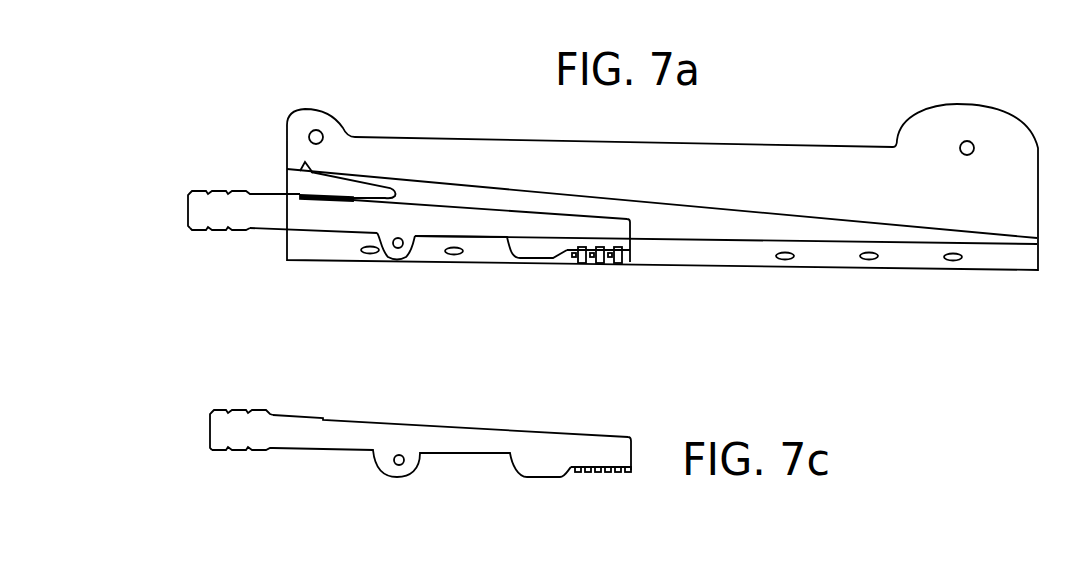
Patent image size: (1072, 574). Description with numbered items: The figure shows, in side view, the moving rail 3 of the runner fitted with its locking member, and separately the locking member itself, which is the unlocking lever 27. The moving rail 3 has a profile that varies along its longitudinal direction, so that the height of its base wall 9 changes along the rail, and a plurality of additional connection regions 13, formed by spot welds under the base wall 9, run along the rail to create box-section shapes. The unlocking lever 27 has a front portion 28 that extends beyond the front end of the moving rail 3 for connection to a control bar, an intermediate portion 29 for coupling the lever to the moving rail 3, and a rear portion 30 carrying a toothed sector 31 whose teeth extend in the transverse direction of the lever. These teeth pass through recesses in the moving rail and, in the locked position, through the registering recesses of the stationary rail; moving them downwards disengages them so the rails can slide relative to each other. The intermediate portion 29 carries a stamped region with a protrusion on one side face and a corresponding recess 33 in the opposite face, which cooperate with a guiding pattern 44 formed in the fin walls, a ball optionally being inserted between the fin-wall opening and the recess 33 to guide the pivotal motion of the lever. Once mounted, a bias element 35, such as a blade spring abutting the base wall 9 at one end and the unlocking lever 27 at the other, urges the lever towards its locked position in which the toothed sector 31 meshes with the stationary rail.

In FIG. 7a, the moving rail 3 is at (775, 103).
In FIG. 7a, the base wall 9 is at (800, 218).
In FIG. 7a, the additional connection regions 13 is at (873, 262).
In FIG. 7a, the unlocking lever 27 is at (162, 194).
In FIG. 7a, the front portion 28 is at (220, 207).
In FIG. 7c, the front portion 28 is at (233, 430).
In FIG. 7c, the intermediate portion 29 is at (398, 438).
In FIG. 7c, the rear portion 30 is at (597, 445).
In FIG. 7a, the toothed sector 31 is at (632, 252).
In FIG. 7c, the toothed sector 31 is at (632, 472).
In FIG. 7c, the recess 33 is at (393, 470).
In FIG. 7a, the bias element 35 is at (352, 182).
In FIG. 7a, the guiding pattern 44 is at (399, 248).